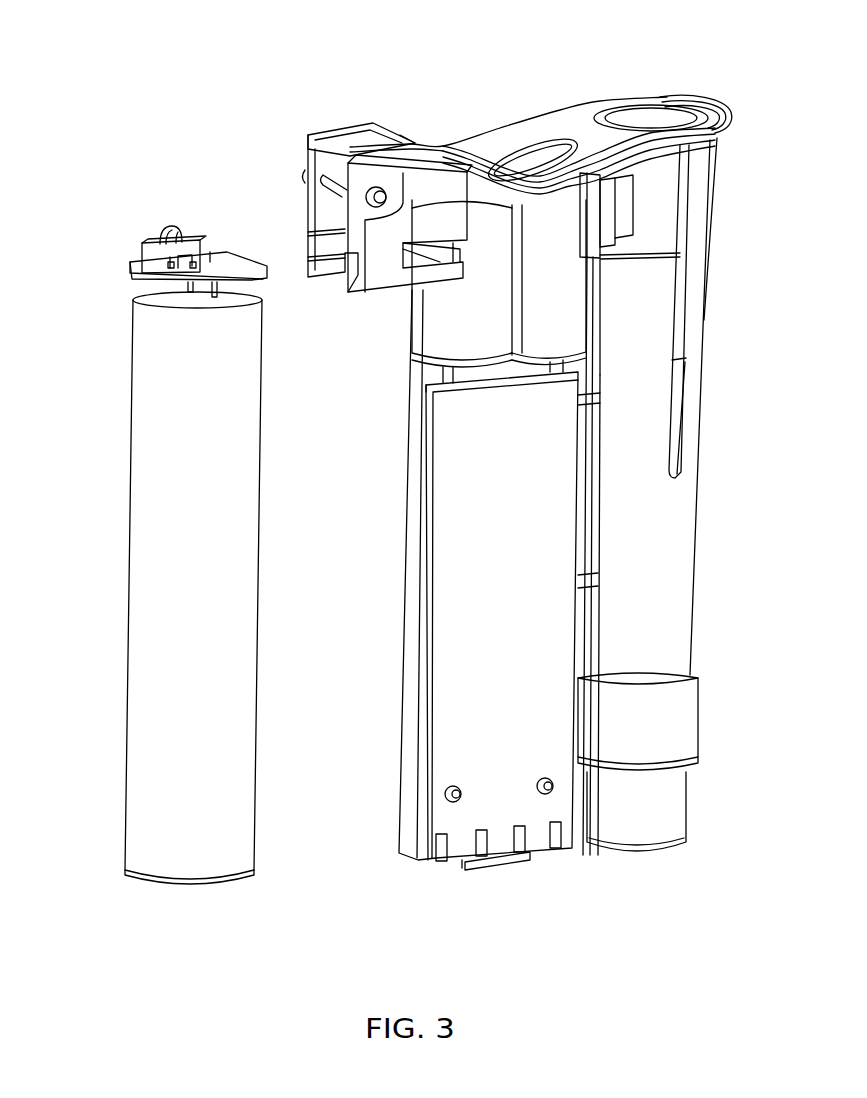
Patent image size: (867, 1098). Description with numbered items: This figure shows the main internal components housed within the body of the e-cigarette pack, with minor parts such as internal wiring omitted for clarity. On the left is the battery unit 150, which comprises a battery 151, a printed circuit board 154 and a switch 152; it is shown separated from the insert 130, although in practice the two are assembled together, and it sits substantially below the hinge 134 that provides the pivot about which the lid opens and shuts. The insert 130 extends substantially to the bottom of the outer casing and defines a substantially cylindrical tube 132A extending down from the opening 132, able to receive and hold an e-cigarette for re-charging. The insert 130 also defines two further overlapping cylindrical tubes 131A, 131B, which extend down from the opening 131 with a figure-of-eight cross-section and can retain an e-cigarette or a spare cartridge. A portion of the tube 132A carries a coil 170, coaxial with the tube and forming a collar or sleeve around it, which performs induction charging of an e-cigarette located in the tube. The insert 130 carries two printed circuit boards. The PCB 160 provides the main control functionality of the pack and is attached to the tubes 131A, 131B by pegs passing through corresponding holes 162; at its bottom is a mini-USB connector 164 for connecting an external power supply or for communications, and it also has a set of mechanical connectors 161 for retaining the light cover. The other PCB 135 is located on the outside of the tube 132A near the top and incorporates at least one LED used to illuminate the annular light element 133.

The insert 130 is at (437, 183).
The opening 131 is at (530, 160).
The cylindrical tube 131A is at (560, 260).
The cylindrical tube 131B is at (490, 312).
The opening 132 is at (639, 110).
The cylindrical tube 132A is at (663, 548).
The annular light element 133 is at (662, 106).
The hinge 134 is at (326, 162).
The printed circuit board 135 is at (608, 200).
The battery unit 150 is at (101, 446).
The battery 151 is at (205, 812).
The switch 152 is at (150, 245).
The printed circuit board 154 is at (137, 275).
The printed circuit board 160 is at (465, 718).
The mechanical connectors 161 is at (445, 862).
The holes 162 is at (555, 786).
The USB connector 164 is at (520, 865).
The coil 170 is at (660, 722).